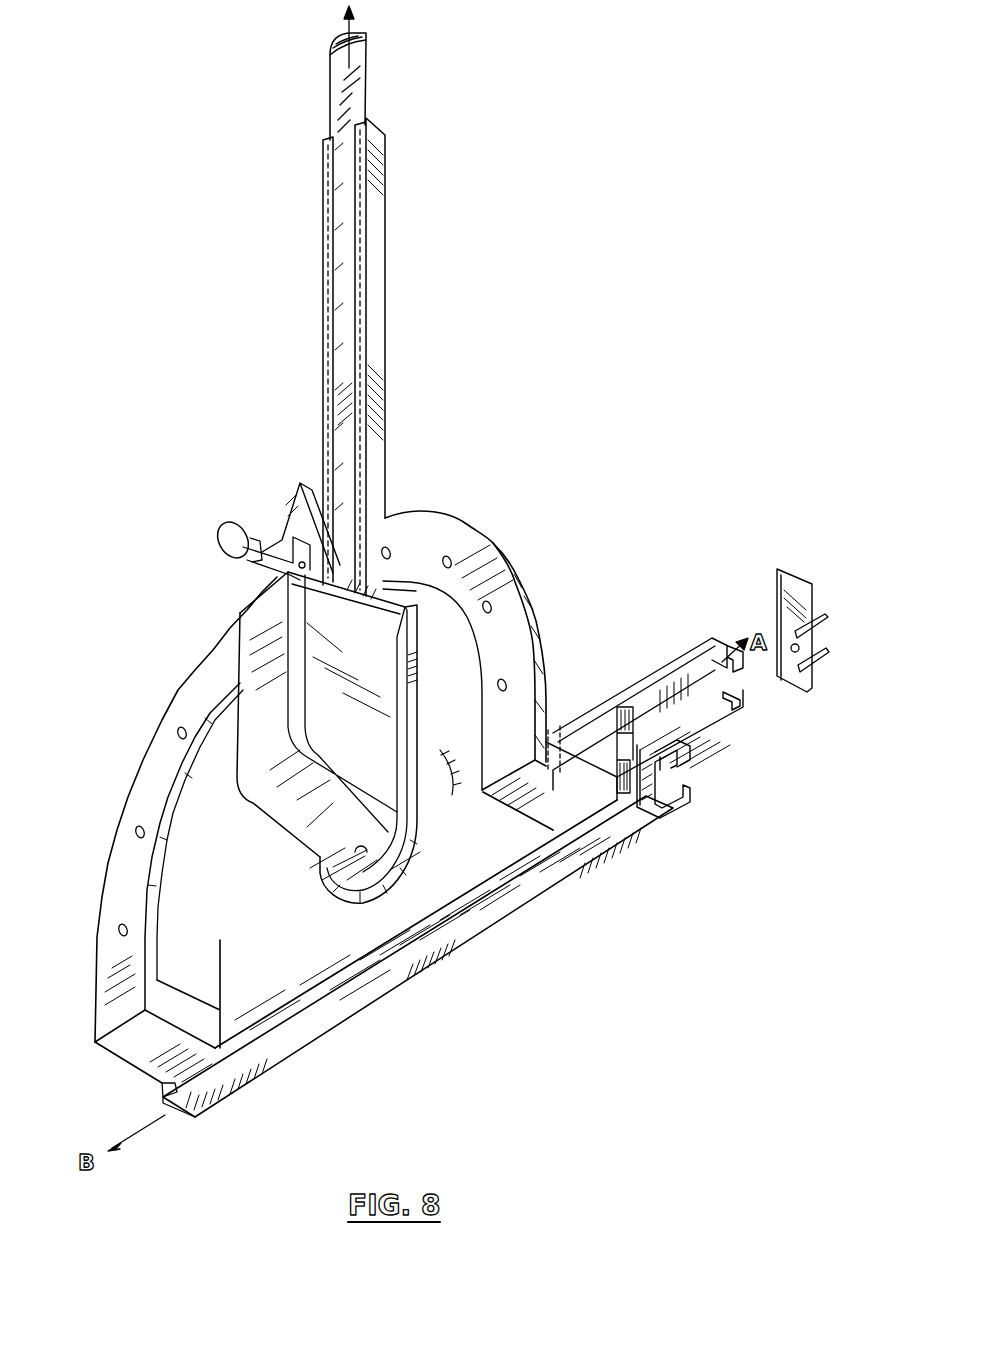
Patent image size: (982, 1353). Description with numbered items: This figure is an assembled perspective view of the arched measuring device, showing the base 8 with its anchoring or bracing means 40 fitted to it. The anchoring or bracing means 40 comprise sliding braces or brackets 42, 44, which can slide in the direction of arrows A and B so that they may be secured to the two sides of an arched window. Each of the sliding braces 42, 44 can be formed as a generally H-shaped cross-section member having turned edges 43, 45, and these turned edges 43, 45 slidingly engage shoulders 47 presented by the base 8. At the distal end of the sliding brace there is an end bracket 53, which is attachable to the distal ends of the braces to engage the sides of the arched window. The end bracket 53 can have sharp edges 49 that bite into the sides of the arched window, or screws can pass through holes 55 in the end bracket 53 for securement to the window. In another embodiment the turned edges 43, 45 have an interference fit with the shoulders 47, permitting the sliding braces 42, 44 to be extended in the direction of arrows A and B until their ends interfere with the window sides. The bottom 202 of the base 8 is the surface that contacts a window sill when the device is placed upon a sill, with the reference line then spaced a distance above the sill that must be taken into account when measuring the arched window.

The base 8 is at (322, 961).
The anchoring or bracing means 40 is at (628, 625).
The sliding brace 42 is at (700, 650).
The turned edge 43 is at (670, 693).
The sliding brace 44 is at (598, 850).
The turned edge 45 is at (678, 780).
The shoulders 47 is at (633, 705).
The sharp edges 49 is at (858, 663).
The end bracket 53 is at (790, 646).
The holes 55 is at (792, 590).
The bottom of the base 202 is at (183, 1062).